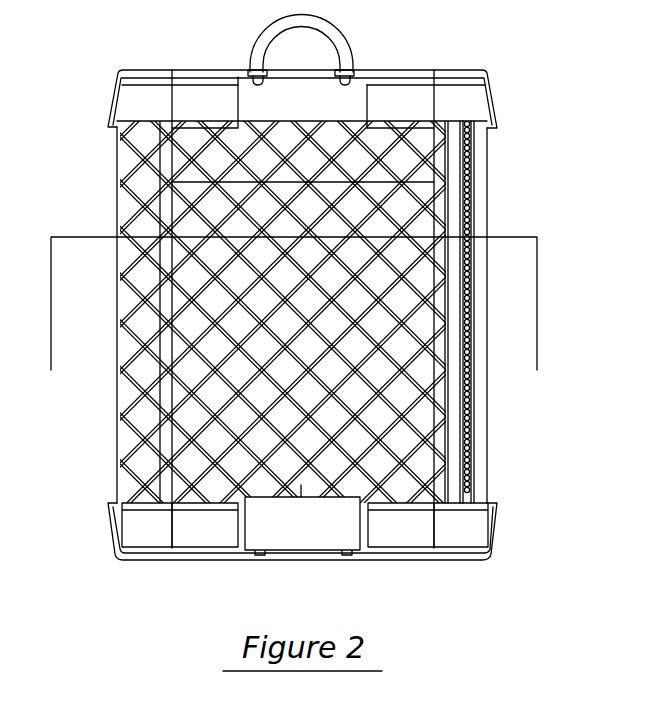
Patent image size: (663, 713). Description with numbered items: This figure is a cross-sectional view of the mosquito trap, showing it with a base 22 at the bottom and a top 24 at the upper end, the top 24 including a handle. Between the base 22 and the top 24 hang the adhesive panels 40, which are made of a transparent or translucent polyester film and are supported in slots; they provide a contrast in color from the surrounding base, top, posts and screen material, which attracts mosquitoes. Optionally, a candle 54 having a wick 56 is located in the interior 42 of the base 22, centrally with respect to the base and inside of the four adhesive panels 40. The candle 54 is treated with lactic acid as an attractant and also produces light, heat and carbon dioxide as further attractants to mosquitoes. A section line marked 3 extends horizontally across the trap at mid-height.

The section line 3- 3 is at (295, 320).
The base 22 is at (142, 537).
The top 24 is at (465, 107).
The adhesive panel 40 is at (162, 155).
The interior 42 is at (240, 552).
The candle 54 is at (322, 548).
The wick 56 is at (300, 487).